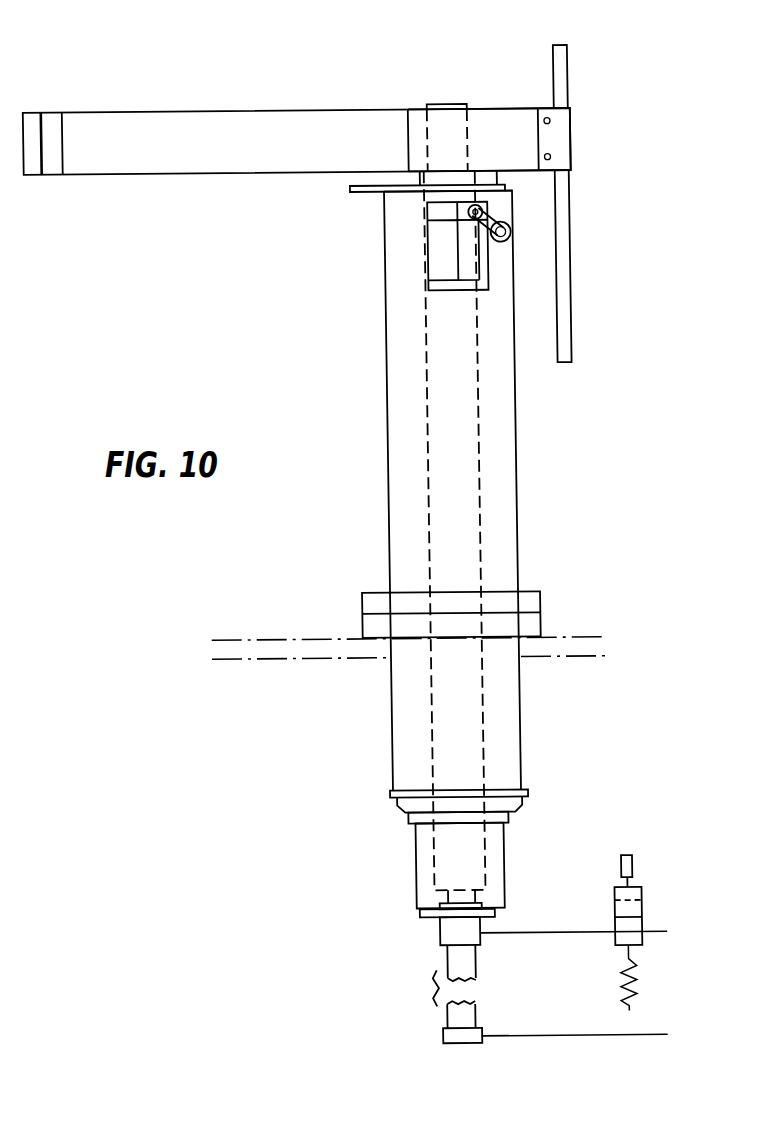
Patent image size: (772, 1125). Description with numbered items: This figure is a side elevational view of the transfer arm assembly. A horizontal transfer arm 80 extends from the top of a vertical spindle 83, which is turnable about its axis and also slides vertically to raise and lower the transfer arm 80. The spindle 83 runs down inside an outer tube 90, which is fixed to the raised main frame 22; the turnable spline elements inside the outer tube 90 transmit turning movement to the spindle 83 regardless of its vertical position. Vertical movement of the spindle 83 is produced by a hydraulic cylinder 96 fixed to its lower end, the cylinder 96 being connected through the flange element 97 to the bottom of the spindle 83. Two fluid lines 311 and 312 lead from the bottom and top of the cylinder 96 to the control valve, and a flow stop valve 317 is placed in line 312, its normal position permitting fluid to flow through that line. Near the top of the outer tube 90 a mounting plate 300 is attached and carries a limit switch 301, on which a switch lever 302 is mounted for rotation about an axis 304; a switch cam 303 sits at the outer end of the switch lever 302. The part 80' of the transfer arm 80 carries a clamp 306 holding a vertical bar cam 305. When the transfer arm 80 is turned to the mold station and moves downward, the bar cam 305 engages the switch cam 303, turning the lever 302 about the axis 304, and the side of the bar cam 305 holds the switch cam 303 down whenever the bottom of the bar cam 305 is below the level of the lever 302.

The transfer arm 80 is at (297, 116).
The part of the transfer arm 80' is at (489, 104).
The spindle 83 is at (449, 104).
The clamp 306 is at (554, 122).
The bar cam 305 is at (569, 343).
The switch lever 302 is at (490, 212).
The outer tube 90 is at (520, 547).
The mounting plate 300 is at (488, 284).
The limit switch 301 is at (437, 210).
The axis 304 is at (478, 206).
The switch cam 303 is at (512, 236).
The raised main frame 22 is at (583, 640).
The flange element 97 is at (418, 915).
The hydraulic cylinder 96 is at (453, 1017).
The fluid line 312 is at (535, 930).
The fluid line 311 is at (582, 1036).
The flow stop valve 317 is at (613, 907).